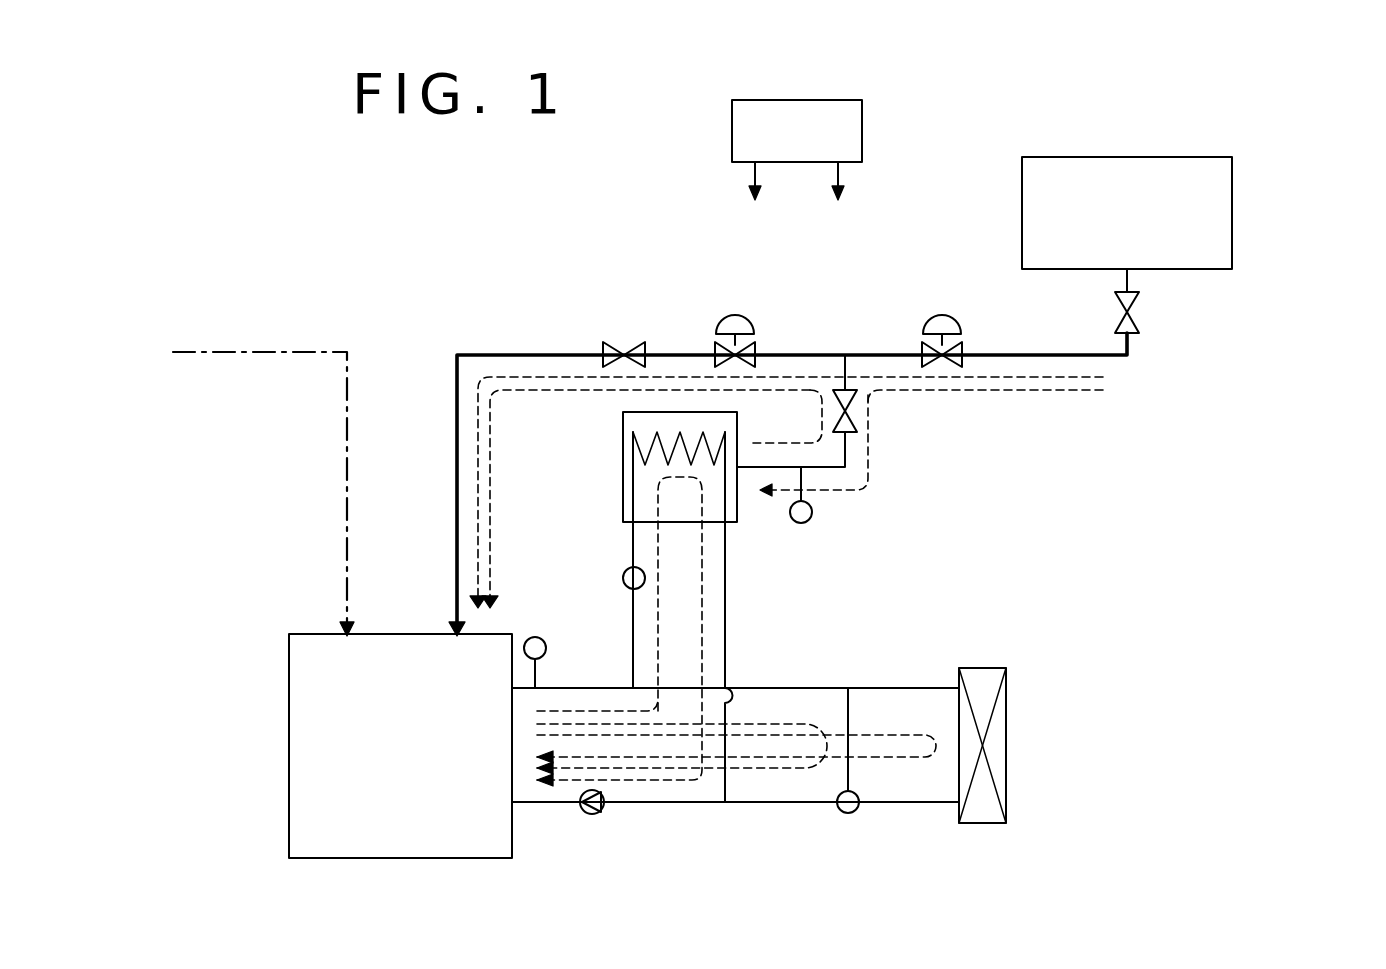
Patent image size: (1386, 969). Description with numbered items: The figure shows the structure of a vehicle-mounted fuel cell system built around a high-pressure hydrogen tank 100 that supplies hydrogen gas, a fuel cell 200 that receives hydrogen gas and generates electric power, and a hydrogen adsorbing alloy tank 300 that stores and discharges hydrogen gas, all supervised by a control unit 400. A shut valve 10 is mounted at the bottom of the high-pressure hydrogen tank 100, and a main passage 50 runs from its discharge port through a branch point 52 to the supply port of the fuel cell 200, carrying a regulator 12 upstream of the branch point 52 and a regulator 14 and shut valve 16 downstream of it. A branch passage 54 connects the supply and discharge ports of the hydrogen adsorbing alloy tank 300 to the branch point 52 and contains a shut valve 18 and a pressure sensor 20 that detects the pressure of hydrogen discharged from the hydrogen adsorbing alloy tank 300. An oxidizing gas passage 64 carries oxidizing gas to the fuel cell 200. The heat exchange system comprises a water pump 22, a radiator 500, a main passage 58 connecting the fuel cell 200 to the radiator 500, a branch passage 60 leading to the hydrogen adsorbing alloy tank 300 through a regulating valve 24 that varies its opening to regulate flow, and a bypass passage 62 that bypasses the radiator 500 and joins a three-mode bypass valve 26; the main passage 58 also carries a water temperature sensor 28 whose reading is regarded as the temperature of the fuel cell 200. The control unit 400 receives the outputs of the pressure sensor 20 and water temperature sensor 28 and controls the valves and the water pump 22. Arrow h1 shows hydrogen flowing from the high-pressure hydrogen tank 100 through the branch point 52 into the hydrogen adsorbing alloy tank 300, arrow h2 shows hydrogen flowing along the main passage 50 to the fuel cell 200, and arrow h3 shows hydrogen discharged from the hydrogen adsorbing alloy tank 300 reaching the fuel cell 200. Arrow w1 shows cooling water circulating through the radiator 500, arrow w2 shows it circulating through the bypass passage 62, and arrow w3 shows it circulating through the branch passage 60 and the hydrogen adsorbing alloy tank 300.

The control unit 400 is at (790, 100).
The high-pressure hydrogen tank 100 is at (1234, 198).
The fuel cell 200 is at (290, 634).
The hydrogen adsorbing alloy tank 300 is at (740, 507).
The radiator 500 is at (995, 668).
The shut valve 10 is at (1130, 318).
The regulator 12 is at (942, 320).
The regulator 14 is at (737, 320).
The shut valve 16 is at (623, 342).
The shut valve 18 is at (855, 406).
The pressure sensor 20 is at (812, 521).
The water pump 22 is at (591, 815).
The regulating valve 24 is at (623, 572).
The bypass valve 26 is at (845, 814).
The water temperature sensor 28 is at (534, 637).
The main passage 50 is at (502, 352).
The branch point 52 is at (845, 370).
The branch passage 54 is at (848, 450).
The main passage 58 is at (812, 688).
The branch passage 60 is at (632, 652).
The bypass passage 62 is at (848, 713).
The oxidizing gas passage 64 is at (290, 352).
The arrow h1 is at (870, 482).
The arrow h2 is at (1018, 383).
The arrow h3 is at (821, 402).
The arrow w1 is at (780, 758).
The arrow w2 is at (707, 769).
The arrow w3 is at (640, 781).